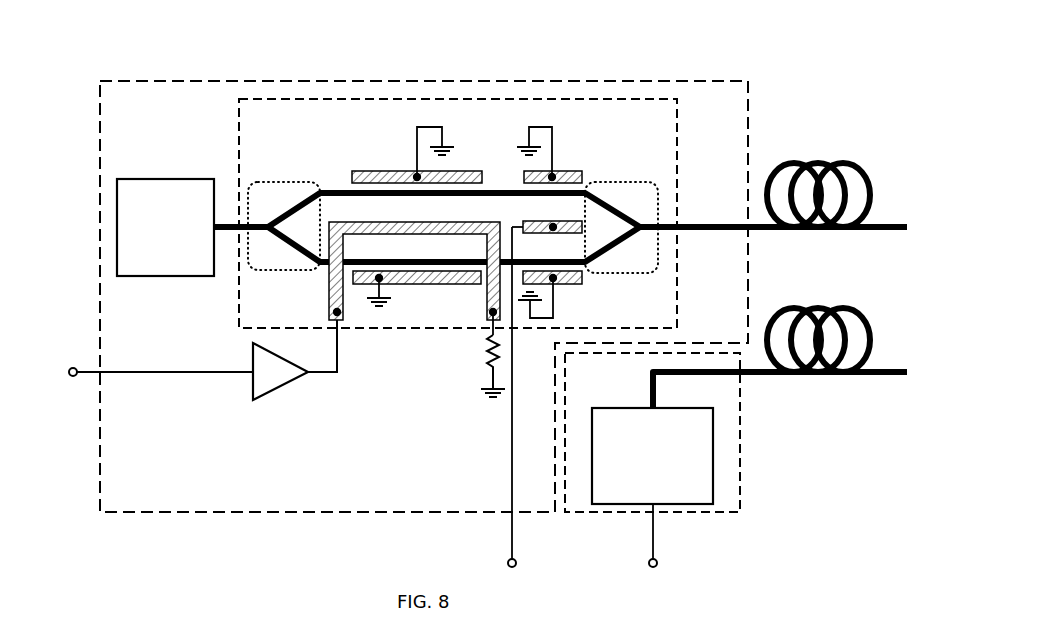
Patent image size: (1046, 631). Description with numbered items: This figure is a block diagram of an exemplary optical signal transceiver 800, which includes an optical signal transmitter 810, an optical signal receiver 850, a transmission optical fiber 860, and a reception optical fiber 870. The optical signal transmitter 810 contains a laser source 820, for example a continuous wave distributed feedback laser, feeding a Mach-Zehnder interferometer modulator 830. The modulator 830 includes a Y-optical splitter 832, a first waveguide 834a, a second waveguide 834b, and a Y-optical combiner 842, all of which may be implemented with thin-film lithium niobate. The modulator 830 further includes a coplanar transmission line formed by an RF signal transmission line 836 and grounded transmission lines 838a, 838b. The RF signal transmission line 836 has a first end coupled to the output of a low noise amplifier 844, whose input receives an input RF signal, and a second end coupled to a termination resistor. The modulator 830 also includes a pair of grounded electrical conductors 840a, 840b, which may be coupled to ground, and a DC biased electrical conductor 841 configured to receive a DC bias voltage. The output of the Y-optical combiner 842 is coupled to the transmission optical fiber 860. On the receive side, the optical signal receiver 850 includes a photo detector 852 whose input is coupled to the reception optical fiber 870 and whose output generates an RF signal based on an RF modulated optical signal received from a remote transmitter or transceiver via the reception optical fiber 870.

The optical signal transceiver 800 is at (557, 60).
The optical signal transmitter 810 is at (457, 353).
The laser source 820 is at (165, 227).
The Mach-Zehnder interferometer (MZI) modulator 830 is at (560, 213).
The Y-optical splitter 832 is at (284, 226).
The first waveguide 834a is at (345, 190).
The second waveguide 834b is at (324, 266).
The RF signal transmission line 836 is at (420, 222).
The grounded transmission line 838a is at (400, 172).
The grounded transmission line 838b is at (400, 285).
The grounded electrical conductor 840a is at (575, 172).
The grounded electrical conductor 840b is at (575, 285).
The DC biased electrical conductor 841 is at (530, 222).
The Y-optical combiner 842 is at (621, 227).
The low noise amplifier (LNA) 844 is at (253, 360).
The optical signal receiver 850 is at (652, 489).
The photo detector (PD) 852 is at (652, 456).
The transmission optical fiber 860 is at (818, 163).
The reception optical fiber 870 is at (818, 308).